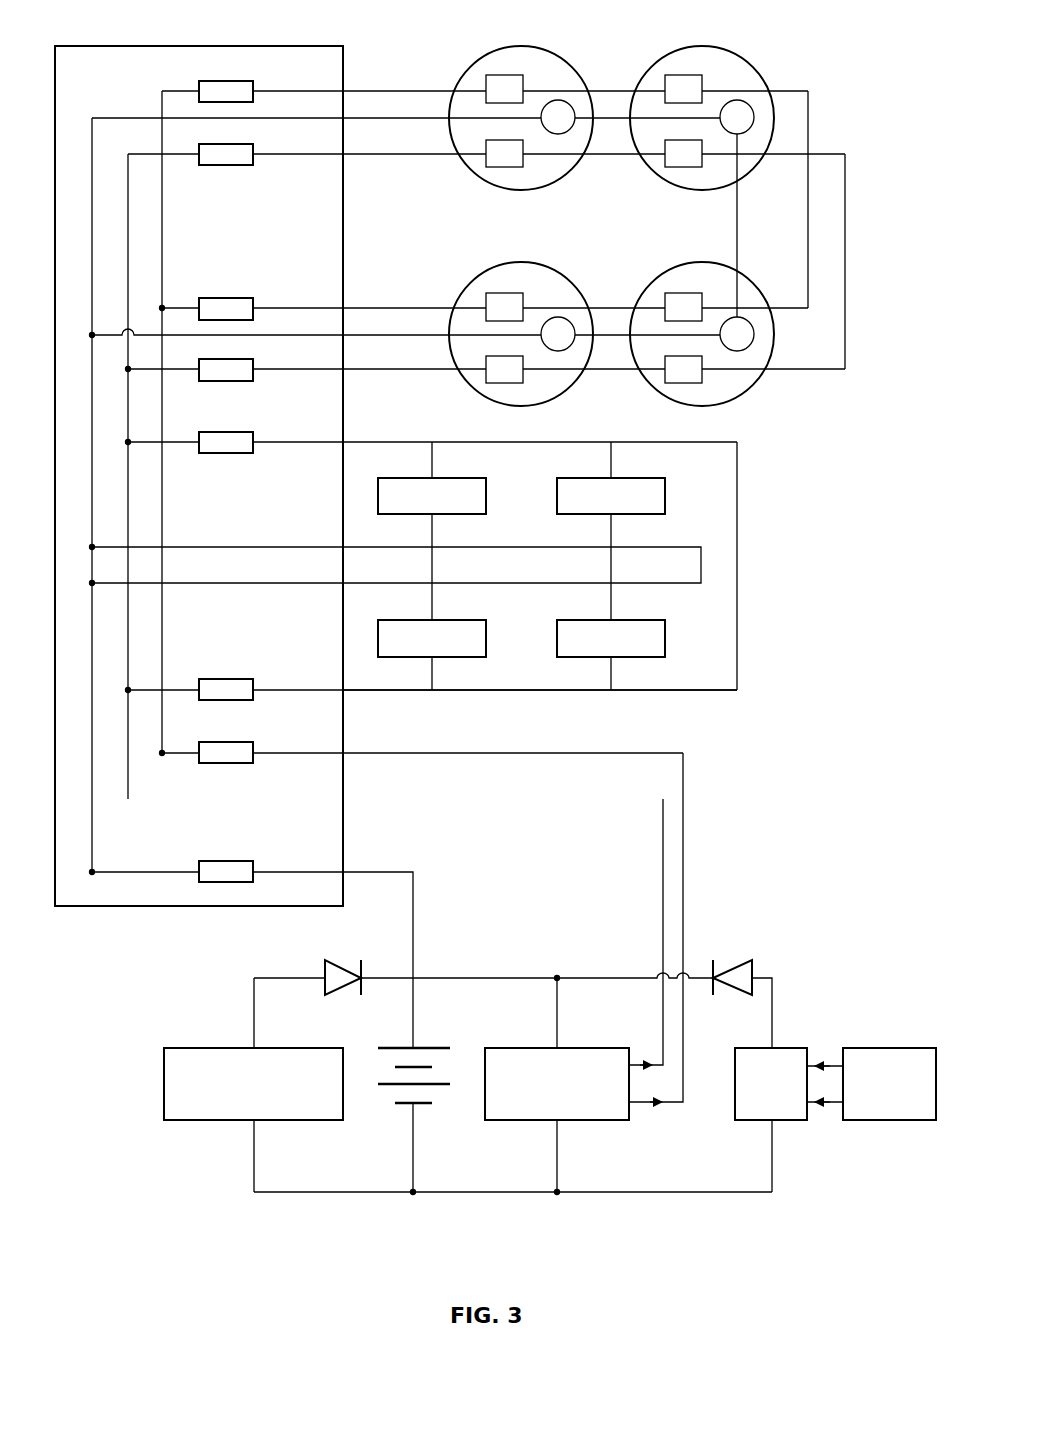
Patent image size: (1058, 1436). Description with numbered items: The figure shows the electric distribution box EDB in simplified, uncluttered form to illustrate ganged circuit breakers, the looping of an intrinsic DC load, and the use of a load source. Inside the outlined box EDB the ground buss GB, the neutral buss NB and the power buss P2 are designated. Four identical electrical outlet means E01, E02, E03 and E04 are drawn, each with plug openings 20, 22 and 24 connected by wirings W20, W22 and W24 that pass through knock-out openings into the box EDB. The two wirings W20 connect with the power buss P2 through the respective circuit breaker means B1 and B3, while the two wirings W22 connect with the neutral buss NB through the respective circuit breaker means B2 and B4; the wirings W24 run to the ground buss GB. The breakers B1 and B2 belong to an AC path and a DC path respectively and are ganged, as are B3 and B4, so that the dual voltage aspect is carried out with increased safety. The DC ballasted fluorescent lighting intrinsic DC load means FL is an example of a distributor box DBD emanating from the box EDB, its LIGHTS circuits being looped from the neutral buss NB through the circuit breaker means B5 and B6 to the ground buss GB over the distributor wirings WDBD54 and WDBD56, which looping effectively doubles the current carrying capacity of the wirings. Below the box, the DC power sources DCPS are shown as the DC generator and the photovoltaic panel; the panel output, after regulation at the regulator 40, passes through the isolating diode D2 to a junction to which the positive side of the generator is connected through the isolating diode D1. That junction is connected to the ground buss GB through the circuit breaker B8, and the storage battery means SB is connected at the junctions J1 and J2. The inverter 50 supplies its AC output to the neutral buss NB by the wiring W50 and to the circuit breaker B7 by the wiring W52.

The electric distribution box EDB is at (196, 44).
The ground buss GB is at (92, 118).
The neutral buss NB is at (128, 154).
The power buss P2 is at (162, 91).
The circuit breaker means B1 is at (485, 86).
The circuit breaker means B2 is at (486, 161).
The circuit breaker means B3 is at (484, 303).
The circuit breaker means B4 is at (486, 376).
The circuit breaker means B5 is at (432, 449).
The circuit breaker means B6 is at (432, 684).
The circuit breaker B7 is at (422, 759).
The circuit breaker B8 is at (252, 913).
The wiring W20 is at (433, 91).
The wiring W24 is at (375, 119).
The wiring W22 is at (437, 155).
The electrical outlet means E01 is at (554, 46).
The electrical outlet means E02 is at (736, 46).
The electrical outlet means E03 is at (701, 274).
The electrical outlet means E04 is at (557, 274).
The electrical plug opening 20 is at (492, 81).
The electrical plug opening 22 is at (503, 162).
The electrical plug opening 24 is at (562, 124).
The DC ballasted fluorescent lighting intrinsic DC load means FL is at (672, 495).
The distributor box DBD is at (744, 625).
The DC bus duct wire WDBD56 is at (701, 565).
The DC bus duct wire WDBD54 is at (685, 690).
The wiring W52 is at (614, 749).
The wiring W50 is at (496, 801).
The isolating diode D1 is at (333, 963).
The isolating diode D2 is at (742, 989).
The junction J1 is at (413, 978).
The junction J2 is at (413, 1192).
The storage battery means SB is at (386, 1092).
The inverter 50 is at (524, 1048).
The regulator 40 is at (745, 1048).
The AC output AC is at (655, 1086).
The DC power source DCPS is at (218, 1124).